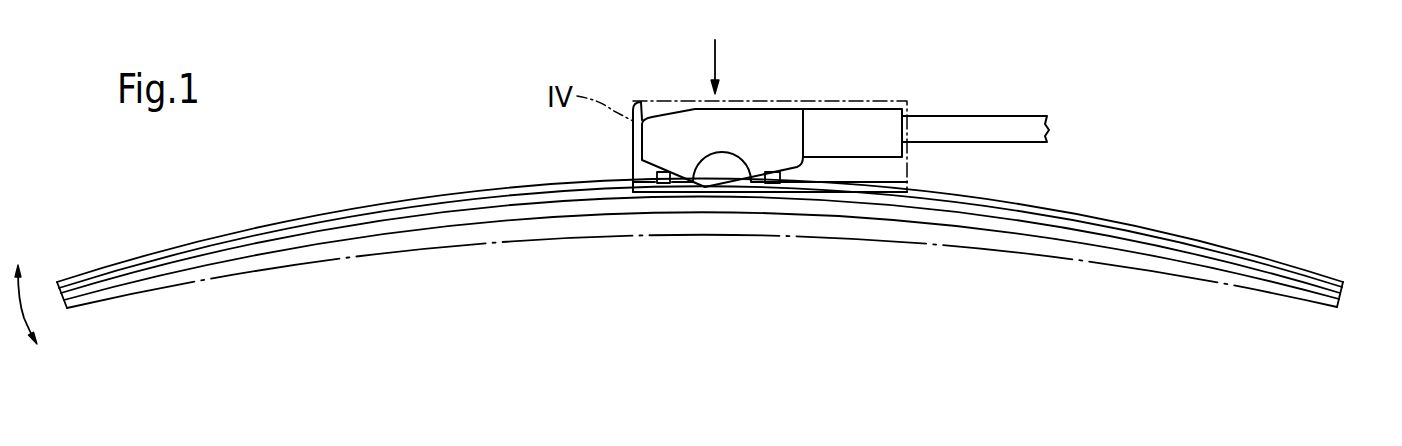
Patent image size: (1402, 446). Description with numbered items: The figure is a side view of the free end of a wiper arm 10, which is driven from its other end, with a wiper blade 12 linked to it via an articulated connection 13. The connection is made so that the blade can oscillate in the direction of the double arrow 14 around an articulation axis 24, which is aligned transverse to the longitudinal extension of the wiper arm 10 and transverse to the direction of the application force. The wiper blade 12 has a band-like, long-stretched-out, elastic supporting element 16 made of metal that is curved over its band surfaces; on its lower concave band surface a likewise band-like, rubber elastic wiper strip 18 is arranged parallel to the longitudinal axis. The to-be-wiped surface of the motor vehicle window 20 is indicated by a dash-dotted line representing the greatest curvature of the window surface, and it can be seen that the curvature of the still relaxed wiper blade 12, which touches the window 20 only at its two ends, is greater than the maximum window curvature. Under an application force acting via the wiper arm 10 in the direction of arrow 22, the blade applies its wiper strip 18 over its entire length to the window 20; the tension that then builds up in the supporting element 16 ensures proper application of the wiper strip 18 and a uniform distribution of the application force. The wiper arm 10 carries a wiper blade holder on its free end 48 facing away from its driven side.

The wiper arm 10 is at (1033, 106).
The wiper blade 12 is at (700, 237).
The articulated connection 13 is at (747, 160).
The double arrow 14 is at (20, 308).
The supporting element 16 is at (1042, 206).
The wiper strip 18 is at (888, 214).
The window 20 is at (664, 233).
The arrow 22 is at (718, 43).
The articulation axis 24 is at (724, 173).
The free end 48 is at (860, 88).